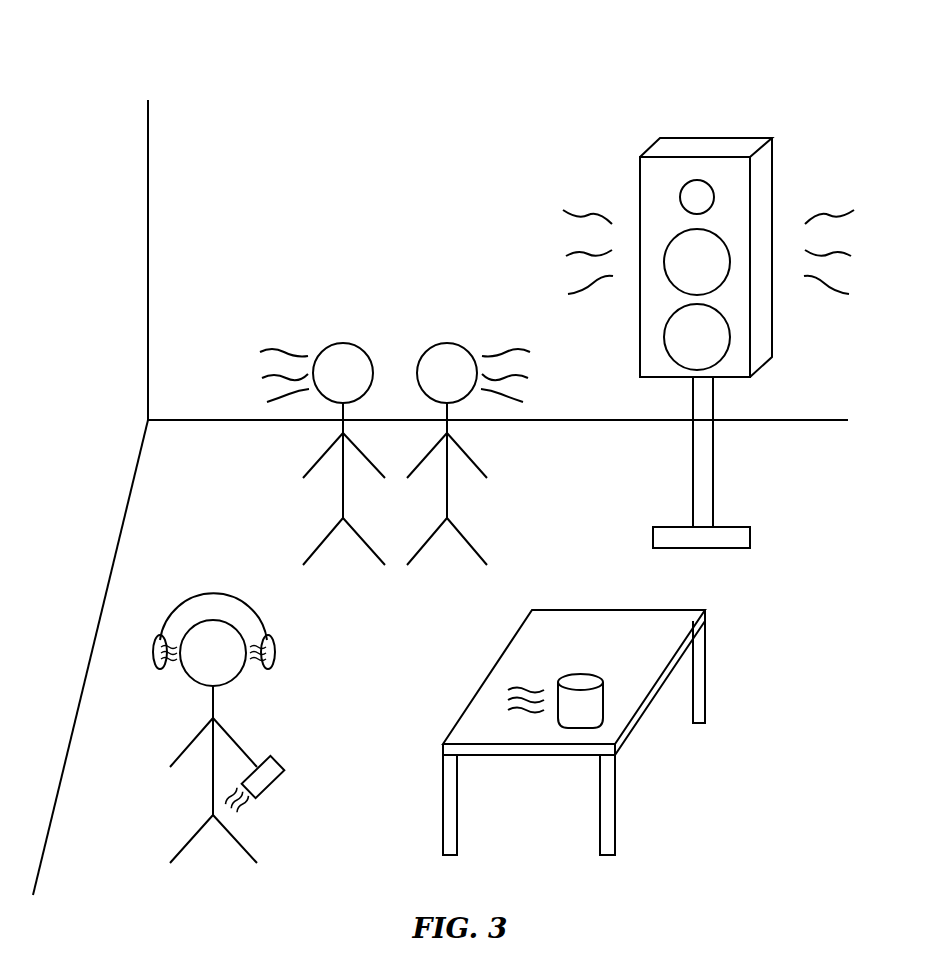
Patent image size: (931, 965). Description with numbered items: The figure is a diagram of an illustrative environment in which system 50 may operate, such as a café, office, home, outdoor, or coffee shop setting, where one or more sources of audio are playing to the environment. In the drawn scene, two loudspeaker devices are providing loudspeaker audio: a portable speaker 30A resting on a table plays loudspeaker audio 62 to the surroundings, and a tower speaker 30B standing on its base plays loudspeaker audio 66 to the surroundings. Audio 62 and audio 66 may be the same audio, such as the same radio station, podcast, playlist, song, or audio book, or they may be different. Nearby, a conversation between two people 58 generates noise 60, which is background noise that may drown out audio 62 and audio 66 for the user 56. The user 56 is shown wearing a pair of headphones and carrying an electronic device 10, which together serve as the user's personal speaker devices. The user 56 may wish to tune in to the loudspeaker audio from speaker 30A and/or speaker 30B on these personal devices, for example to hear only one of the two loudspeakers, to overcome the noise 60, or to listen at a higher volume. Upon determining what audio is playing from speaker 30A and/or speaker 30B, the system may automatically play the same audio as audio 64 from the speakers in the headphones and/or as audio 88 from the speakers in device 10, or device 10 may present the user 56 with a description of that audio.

The system 50 is at (575, 76).
The tower speaker 30B is at (738, 137).
The loudspeaker audio 66 is at (592, 302).
The people 58 is at (312, 338).
The noise 60 is at (286, 342).
The user 56 is at (171, 793).
The audio 64 is at (172, 676).
The electronic device 10 is at (285, 767).
The audio 88 is at (256, 814).
The portable speaker 30A is at (605, 687).
The loudspeaker audio 62 is at (534, 676).